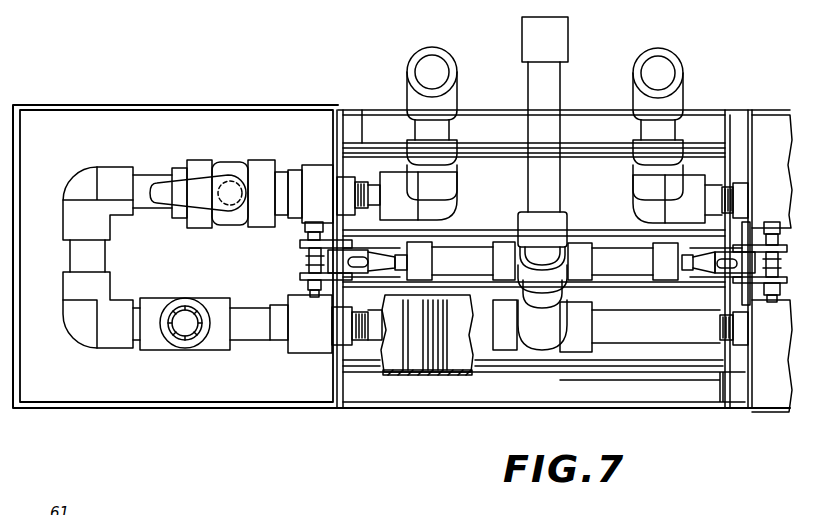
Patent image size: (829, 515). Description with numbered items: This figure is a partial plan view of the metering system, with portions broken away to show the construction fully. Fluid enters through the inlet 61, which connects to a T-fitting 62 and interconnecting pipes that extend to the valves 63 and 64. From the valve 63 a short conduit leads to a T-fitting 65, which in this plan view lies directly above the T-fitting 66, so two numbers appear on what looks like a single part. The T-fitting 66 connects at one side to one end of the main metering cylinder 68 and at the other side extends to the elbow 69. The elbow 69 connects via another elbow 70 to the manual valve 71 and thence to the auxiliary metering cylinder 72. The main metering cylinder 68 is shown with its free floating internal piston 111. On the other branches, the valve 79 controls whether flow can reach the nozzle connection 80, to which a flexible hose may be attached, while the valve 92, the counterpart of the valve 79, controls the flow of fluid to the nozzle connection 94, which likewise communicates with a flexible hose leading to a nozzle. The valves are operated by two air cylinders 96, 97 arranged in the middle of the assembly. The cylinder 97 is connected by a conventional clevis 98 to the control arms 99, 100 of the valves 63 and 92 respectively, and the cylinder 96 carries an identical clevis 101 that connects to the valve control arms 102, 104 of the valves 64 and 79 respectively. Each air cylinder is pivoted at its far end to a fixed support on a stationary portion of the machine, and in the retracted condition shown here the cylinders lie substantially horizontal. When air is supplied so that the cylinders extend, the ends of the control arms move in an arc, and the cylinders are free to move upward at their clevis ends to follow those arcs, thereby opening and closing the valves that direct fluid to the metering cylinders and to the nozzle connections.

The inlet 61 is at (557, 32).
The T-fitting 62 is at (552, 322).
The valve 63 is at (308, 344).
The valve 64 is at (768, 348).
The T-fitting 65 is at (200, 341).
The T-fitting 66 is at (158, 344).
The main metering cylinder 68 is at (466, 371).
The elbow 69 is at (82, 331).
The elbow 70 is at (81, 179).
The manual valve 71 is at (229, 165).
The auxiliary metering cylinder 72 is at (483, 167).
The valve 79 is at (763, 176).
The nozzle connection 80 is at (685, 92).
The valve 92 is at (313, 171).
The nozzle connection 94 is at (412, 72).
The air cylinder 96 is at (602, 252).
The air cylinder 97 is at (462, 253).
The clevis 98 is at (376, 255).
The control arm 99 is at (301, 276).
The control arm 100 is at (300, 243).
The clevis 101 is at (706, 263).
The valve control arm 102 is at (758, 288).
The valve control arm 104 is at (757, 247).
The free floating internal piston 111 is at (425, 357).